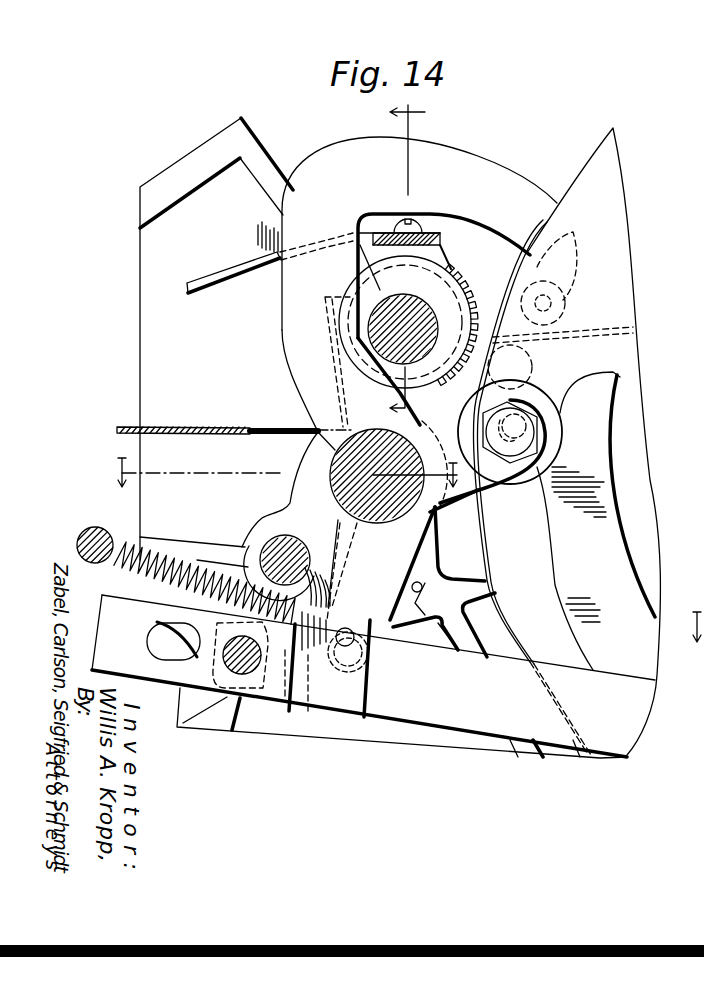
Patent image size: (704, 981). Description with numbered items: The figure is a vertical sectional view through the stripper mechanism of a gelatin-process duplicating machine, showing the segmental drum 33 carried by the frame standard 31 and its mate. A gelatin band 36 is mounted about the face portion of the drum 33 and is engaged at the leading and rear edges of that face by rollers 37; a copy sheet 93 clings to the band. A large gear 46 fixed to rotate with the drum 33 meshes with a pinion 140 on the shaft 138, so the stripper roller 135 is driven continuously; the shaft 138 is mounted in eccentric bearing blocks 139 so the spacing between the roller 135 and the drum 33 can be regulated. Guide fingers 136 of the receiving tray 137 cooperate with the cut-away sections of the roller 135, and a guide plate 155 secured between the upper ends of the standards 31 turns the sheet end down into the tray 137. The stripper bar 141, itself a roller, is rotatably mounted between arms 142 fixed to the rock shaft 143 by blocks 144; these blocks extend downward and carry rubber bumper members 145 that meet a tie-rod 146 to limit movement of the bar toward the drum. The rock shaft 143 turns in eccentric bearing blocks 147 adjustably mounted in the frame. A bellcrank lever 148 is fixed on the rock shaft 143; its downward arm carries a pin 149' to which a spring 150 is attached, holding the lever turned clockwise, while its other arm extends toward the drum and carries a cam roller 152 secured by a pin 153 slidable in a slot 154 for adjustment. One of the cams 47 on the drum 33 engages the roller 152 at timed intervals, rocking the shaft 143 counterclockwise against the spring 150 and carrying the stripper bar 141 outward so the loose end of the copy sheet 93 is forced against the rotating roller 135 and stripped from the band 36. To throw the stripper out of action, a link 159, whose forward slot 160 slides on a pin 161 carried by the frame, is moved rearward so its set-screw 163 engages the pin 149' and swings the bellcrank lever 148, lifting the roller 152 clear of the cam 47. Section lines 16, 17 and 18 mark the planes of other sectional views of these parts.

The standard 31 is at (194, 152).
The arms 142 is at (350, 151).
The drum 33 is at (603, 147).
The cam 47 is at (607, 390).
The section line 16 is at (402, 256).
The section line 17 is at (286, 478).
The section line 18 is at (685, 627).
The guide plate 155 is at (239, 264).
The eccentric bearing blocks 139 is at (380, 300).
The stripper roller 135 is at (443, 288).
The shaft 138 is at (420, 289).
The pinion 140 is at (463, 288).
The copy sheet 93 is at (511, 260).
The stripper bar 141 is at (560, 303).
The gelatin band 36 is at (620, 322).
The large gear 46 is at (490, 317).
The rollers 37 is at (527, 365).
The guide fingers 136 is at (326, 330).
The receiving tray 137 is at (203, 414).
The eccentric bearing blocks 147 is at (335, 451).
The rock shaft 143 is at (343, 510).
The slot 154 is at (560, 437).
The pin 153 is at (490, 485).
The cam roller 152 is at (540, 468).
The bellcrank lever 148 is at (413, 549).
The blocks 144 is at (393, 625).
The bumper members 145 is at (303, 534).
The tie-rod 146 is at (267, 545).
The spring 150 is at (173, 558).
The pin 149' is at (359, 628).
The slot 160 is at (157, 648).
The pin 161 is at (223, 667).
The set-screw 163 is at (297, 678).
The link 159 is at (490, 717).